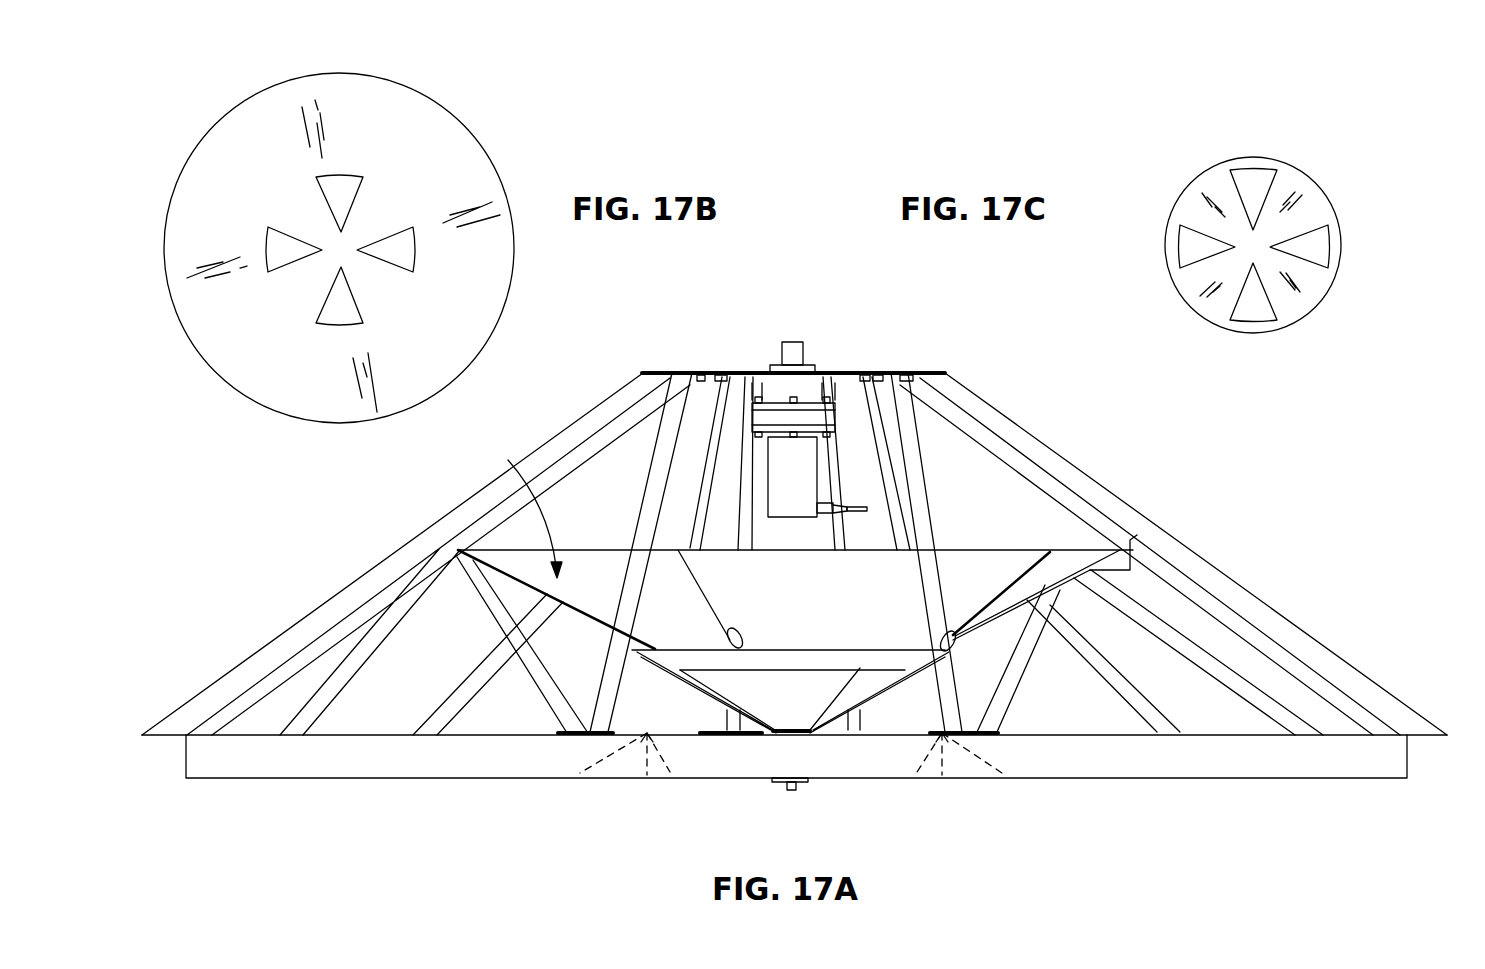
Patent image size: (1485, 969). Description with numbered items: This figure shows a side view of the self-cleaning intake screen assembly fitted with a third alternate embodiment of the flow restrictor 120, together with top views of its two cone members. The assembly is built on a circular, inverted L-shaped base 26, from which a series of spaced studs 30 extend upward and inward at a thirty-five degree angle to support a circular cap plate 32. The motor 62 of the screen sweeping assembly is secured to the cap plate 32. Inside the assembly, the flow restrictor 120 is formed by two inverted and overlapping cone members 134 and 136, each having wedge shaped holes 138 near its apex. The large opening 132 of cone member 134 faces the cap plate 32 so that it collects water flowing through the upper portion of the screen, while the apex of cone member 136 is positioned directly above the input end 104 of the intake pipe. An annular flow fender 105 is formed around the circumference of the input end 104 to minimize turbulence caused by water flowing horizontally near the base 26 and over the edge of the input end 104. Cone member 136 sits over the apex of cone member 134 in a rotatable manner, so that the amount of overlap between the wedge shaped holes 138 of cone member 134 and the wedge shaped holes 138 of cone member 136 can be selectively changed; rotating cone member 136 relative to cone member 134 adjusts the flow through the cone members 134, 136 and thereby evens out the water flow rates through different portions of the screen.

In FIG. 17A, the base 26 is at (1410, 753).
In FIG. 17A, the studs 30 is at (325, 605).
In FIG. 17A, the cap plate 32 is at (880, 372).
In FIG. 17A, the motor 62 is at (800, 483).
In FIG. 17A, the input end 104 is at (648, 767).
In FIG. 17A, the flow fender 105 is at (604, 744).
In FIG. 17A, the flow restrictor 120 is at (516, 504).
In FIG. 17A, the opening 132 is at (710, 554).
In FIG. 17A, the cone member 134 is at (783, 608).
In FIG. 17B, the cone member 134 is at (440, 95).
In FIG. 17A, the cone member 136 is at (778, 708).
In FIG. 17C, the cone member 136 is at (1317, 180).
In FIG. 17A, the wedge shaped holes 138 is at (750, 692).
In FIG. 17B, the wedge shaped holes 138 is at (350, 177).
In FIG. 17C, the wedge shaped holes 138 is at (1262, 170).